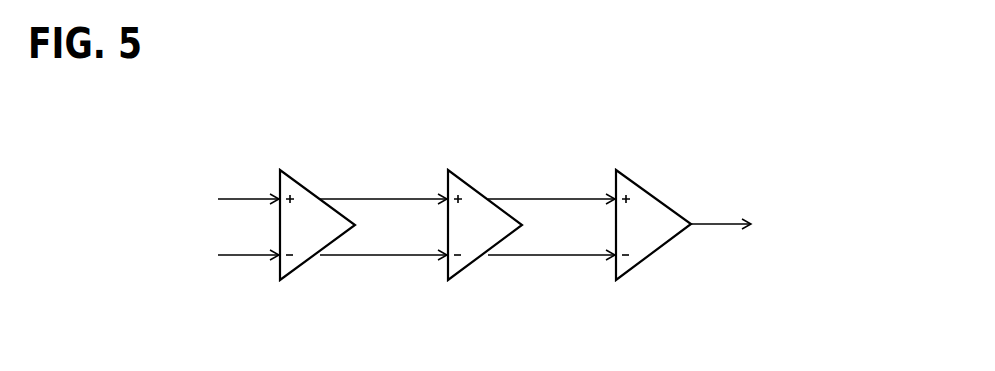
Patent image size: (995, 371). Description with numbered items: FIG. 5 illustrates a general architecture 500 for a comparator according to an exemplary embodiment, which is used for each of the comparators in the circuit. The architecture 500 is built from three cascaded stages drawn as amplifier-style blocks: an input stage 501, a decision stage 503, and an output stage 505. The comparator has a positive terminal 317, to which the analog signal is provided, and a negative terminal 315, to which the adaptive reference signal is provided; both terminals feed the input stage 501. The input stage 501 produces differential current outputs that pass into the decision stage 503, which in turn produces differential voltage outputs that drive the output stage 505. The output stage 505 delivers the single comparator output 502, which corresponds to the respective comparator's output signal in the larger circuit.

The general architecture 500 is at (72, 110).
The input stage 501 is at (283, 170).
The decision stage 503 is at (450, 170).
The output stage 505 is at (615, 282).
The positive terminal 317 is at (216, 199).
The negative terminal 315 is at (216, 257).
The output 502 is at (752, 224).